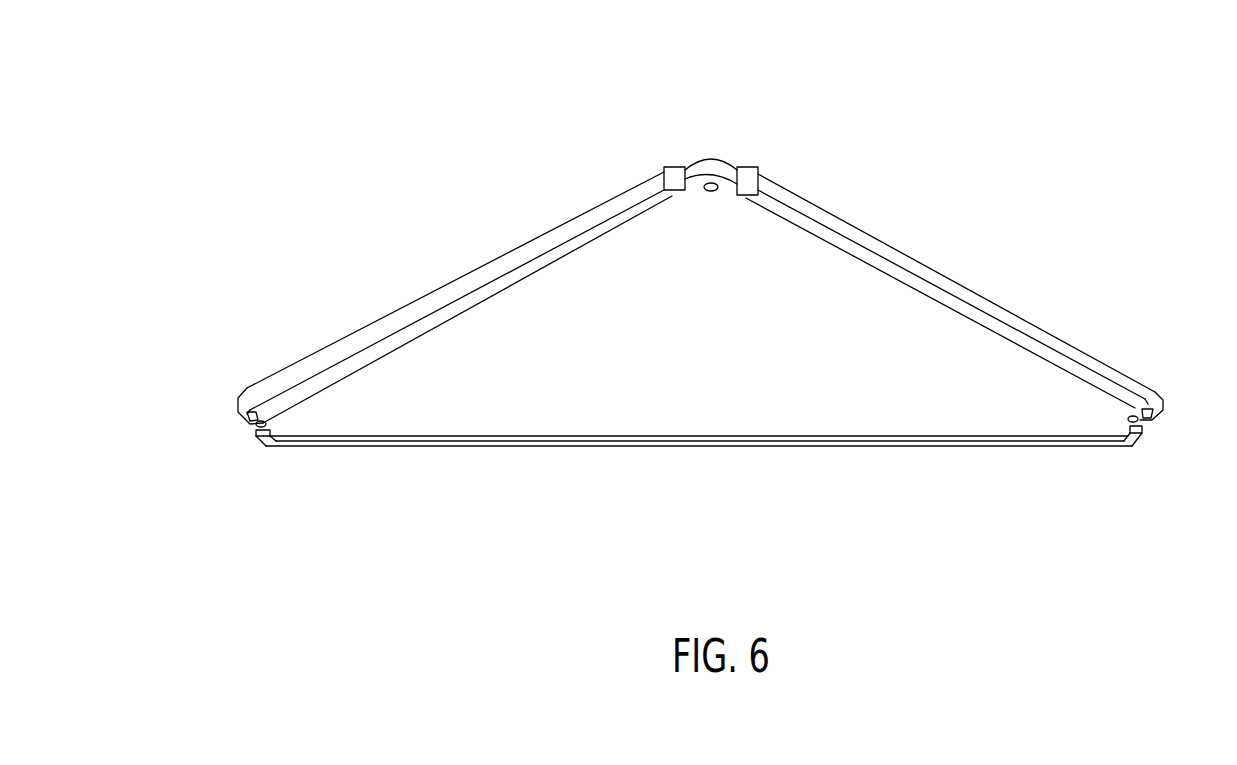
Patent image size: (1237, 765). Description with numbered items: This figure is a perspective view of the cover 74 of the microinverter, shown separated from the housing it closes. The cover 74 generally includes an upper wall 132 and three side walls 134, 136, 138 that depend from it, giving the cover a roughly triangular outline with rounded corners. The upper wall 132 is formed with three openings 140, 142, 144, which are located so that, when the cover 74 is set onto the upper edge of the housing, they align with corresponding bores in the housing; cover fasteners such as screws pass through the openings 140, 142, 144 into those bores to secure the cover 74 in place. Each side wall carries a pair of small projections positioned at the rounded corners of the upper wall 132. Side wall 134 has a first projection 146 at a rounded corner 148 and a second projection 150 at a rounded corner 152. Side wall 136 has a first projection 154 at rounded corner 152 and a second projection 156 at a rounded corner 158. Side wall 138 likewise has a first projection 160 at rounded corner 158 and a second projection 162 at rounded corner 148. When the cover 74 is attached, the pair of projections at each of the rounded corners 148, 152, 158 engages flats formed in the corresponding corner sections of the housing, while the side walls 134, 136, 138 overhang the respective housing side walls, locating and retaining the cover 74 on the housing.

The cover 74 is at (1078, 103).
The upper wall 132 is at (643, 413).
The side wall 134 is at (467, 280).
The side wall 136 is at (792, 448).
The side wall 138 is at (968, 290).
The opening 140 is at (252, 413).
The opening 142 is at (1143, 402).
The opening 144 is at (705, 186).
The first projection 146 is at (684, 190).
The rounded corner 148 is at (710, 158).
The second projection 150 is at (248, 418).
The rounded corner 152 is at (253, 435).
The first projection 154 is at (275, 430).
The second projection 156 is at (1122, 432).
The rounded corner 158 is at (1147, 430).
The first projection 160 is at (1160, 415).
The second projection 162 is at (747, 177).